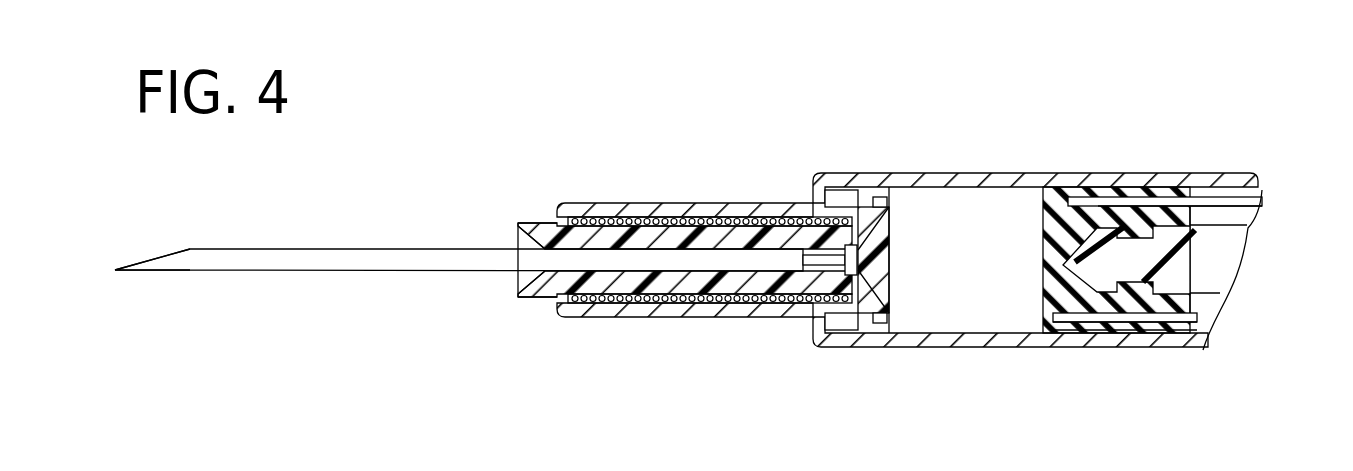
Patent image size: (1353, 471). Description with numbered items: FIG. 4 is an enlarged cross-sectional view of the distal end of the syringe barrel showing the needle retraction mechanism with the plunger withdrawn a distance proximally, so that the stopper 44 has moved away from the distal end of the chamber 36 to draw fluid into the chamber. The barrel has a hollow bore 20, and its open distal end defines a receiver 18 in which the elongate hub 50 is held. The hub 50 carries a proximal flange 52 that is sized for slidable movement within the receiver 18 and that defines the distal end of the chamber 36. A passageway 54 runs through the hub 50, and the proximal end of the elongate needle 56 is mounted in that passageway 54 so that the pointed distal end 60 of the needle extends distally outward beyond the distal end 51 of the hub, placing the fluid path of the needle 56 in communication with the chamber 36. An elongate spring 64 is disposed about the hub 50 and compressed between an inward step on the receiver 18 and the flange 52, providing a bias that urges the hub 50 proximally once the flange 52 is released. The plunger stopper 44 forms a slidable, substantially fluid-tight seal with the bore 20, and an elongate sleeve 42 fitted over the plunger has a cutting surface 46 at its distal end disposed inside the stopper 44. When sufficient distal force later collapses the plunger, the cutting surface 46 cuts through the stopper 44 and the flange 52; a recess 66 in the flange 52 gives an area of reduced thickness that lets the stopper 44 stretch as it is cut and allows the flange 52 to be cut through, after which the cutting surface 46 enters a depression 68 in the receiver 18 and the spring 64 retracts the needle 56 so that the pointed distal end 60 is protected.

The receiver 18 is at (621, 205).
The hollow bore 20 is at (1222, 258).
The chamber 36 is at (975, 248).
The sleeve 42 is at (1200, 320).
The stopper 44 is at (1062, 222).
The cutting surface 46 is at (1063, 315).
The hub 50 is at (766, 240).
The distal end of hub 51 is at (520, 223).
The proximal flange 52 is at (884, 222).
The passageway 54 is at (818, 268).
The needle 56 is at (293, 248).
The pointed distal end 60 is at (117, 266).
The spring 64 is at (681, 222).
The recess 66 is at (880, 198).
The depression 68 is at (836, 190).